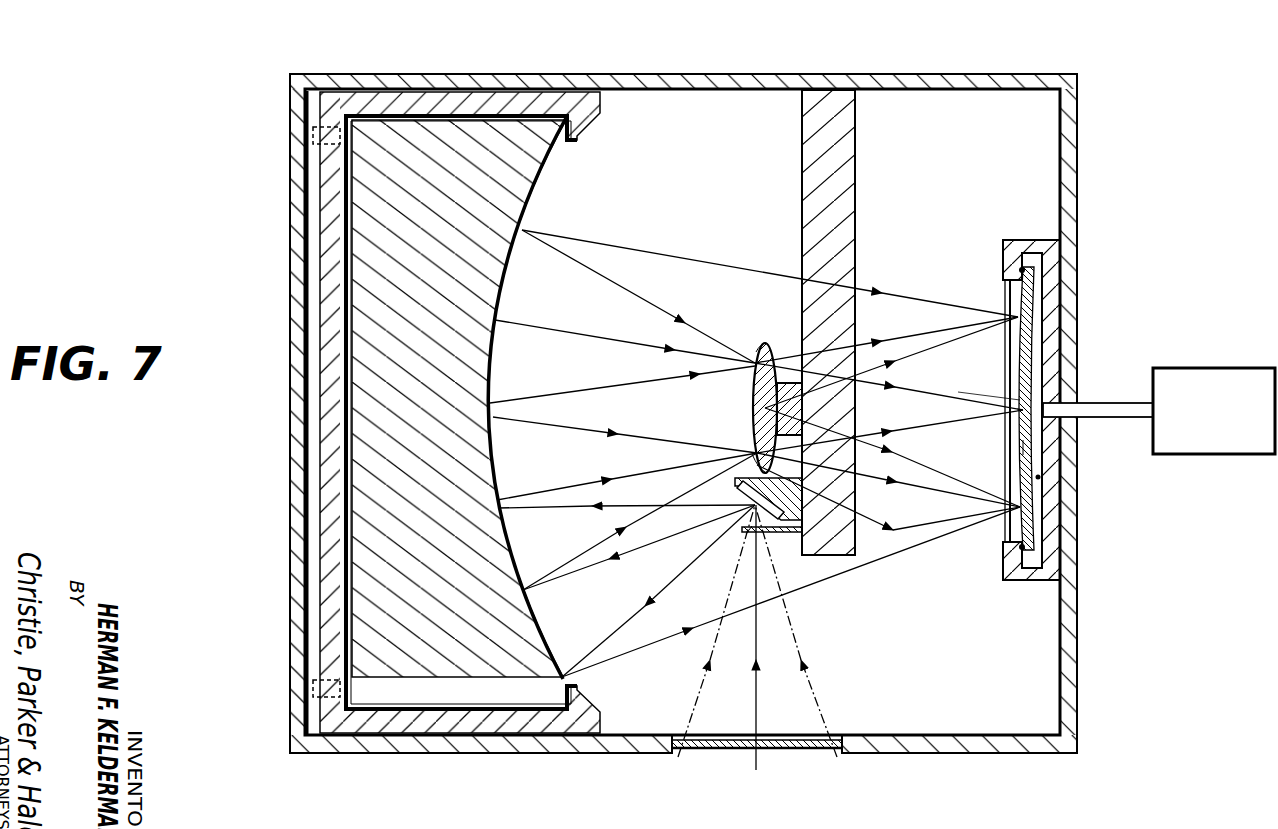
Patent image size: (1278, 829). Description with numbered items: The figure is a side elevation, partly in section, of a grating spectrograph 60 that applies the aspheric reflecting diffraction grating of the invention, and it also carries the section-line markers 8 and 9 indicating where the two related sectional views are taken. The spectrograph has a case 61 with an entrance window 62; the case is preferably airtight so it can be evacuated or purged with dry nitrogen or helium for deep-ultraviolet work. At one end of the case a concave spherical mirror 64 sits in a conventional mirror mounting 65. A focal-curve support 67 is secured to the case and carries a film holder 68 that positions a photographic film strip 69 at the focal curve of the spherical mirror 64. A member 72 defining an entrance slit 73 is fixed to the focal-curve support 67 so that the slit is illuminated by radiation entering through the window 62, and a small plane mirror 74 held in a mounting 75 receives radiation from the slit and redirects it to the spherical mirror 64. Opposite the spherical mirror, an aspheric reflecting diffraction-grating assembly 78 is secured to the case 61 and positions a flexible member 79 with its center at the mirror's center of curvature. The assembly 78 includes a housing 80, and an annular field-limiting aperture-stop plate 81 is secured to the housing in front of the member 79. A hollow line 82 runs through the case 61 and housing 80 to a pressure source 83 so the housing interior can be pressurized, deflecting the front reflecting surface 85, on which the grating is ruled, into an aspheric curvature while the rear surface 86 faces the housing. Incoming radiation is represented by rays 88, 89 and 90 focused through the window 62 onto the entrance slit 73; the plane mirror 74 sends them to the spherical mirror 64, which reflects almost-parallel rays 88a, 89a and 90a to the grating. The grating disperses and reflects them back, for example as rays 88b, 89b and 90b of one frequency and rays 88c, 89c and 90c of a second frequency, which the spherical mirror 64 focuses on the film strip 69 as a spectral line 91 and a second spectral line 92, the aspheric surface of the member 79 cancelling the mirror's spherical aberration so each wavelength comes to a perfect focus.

The grating spectrograph 60 is at (300, 72).
The case 61 is at (466, 758).
The entrance window 62 is at (726, 749).
The concave spherical mirror 64 is at (566, 152).
The mirror mounting 65 is at (601, 91).
The focal-curve support 67 is at (806, 100).
The film holder 68 is at (790, 382).
The photographic film strip 69 is at (766, 344).
The member 72 is at (781, 535).
The entrance slit 73 is at (745, 536).
The plane mirror 74 is at (738, 511).
The mounting 75 is at (735, 489).
The aspheric reflecting diffraction-grating assembly 78 is at (985, 562).
The flexible member 79 is at (1023, 450).
The housing 80 is at (1020, 582).
The annular field-limiting aperture-stop plate 81 is at (1005, 285).
The hollow line 82 is at (1133, 418).
The pressure source 83 is at (1228, 372).
The front reflecting surface 85 is at (1023, 380).
The rear surface 86 is at (1037, 477).
The ray 88 is at (700, 698).
The almost-parallel ray 88a is at (692, 632).
The dispersed ray of one frequency 88b is at (926, 526).
The dispersed ray of second frequency 88c is at (945, 485).
The ray 89 is at (756, 706).
The almost-parallel ray 89a is at (615, 555).
The dispersed ray of one frequency 89b is at (966, 420).
The dispersed ray of second frequency 89c is at (958, 392).
The ray 90 is at (812, 690).
The almost-parallel ray 90a is at (620, 462).
The dispersed ray of one frequency 90b is at (914, 342).
The dispersed ray of second frequency 90c is at (915, 290).
The spectral line 91 is at (753, 456).
The second spectral line 92 is at (758, 355).
The section line 8- 8 is at (642, 592).
The section line 9- 9 is at (777, 410).